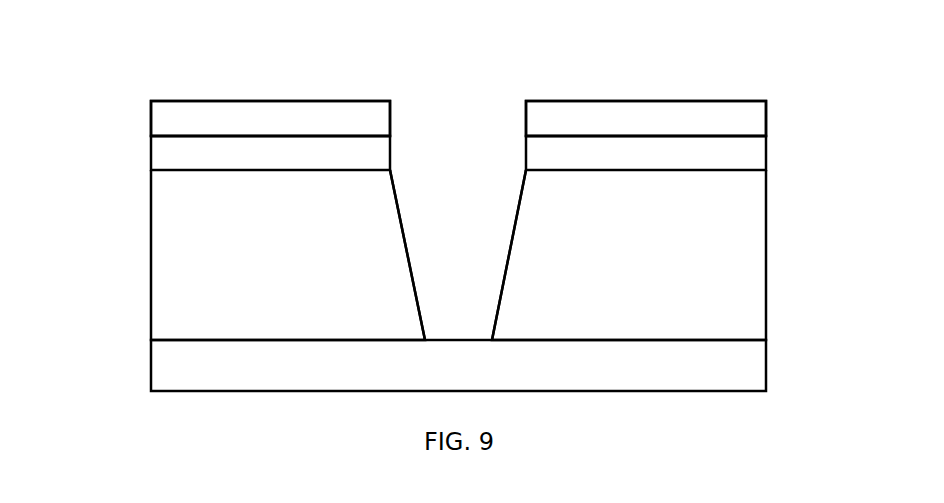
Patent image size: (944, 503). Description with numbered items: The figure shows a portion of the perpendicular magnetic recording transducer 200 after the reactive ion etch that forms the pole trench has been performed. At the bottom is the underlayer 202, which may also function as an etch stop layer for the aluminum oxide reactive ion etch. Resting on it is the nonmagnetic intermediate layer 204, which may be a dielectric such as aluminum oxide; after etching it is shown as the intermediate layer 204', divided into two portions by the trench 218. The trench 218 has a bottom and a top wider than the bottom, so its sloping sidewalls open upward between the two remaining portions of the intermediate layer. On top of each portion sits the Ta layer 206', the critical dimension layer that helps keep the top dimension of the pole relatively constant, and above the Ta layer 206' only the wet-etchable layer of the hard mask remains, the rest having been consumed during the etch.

The PMR transducer 200 is at (480, 27).
The underlayer 202 is at (766, 377).
The intermediate layer 204 is at (243, 255).
The intermediate layer 204' is at (676, 255).
The Ta layer 206' is at (477, 151).
The trench 218 is at (459, 137).